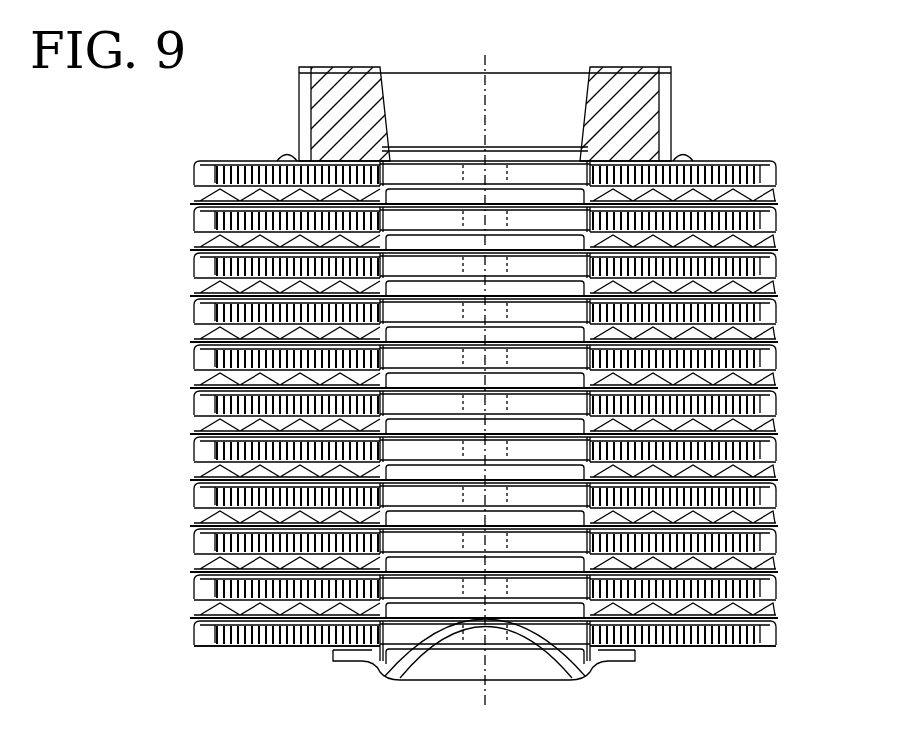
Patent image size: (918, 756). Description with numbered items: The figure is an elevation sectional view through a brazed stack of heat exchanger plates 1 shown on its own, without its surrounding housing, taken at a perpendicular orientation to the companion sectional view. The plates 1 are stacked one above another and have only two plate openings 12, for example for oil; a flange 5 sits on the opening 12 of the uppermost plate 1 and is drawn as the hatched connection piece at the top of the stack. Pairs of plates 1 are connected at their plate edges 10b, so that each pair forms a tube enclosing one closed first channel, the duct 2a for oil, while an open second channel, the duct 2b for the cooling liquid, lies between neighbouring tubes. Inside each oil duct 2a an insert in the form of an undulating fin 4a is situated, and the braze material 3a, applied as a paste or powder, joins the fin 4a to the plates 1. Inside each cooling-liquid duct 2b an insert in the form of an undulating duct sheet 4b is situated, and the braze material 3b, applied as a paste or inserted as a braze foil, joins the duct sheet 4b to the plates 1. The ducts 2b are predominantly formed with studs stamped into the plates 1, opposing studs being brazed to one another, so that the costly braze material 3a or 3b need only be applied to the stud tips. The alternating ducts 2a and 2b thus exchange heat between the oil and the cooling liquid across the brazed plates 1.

The heat exchanger plate 1 is at (735, 188).
The duct for oil 2a is at (217, 175).
The braze material 3a is at (220, 220).
The duct for cooling liquid 2b is at (220, 245).
The braze material 3b is at (217, 293).
The undulating fin 4a is at (215, 455).
The undulating duct sheet 4b is at (777, 338).
The flange 5 is at (643, 92).
The plate edge 10b is at (198, 490).
The plate opening 12 is at (492, 590).